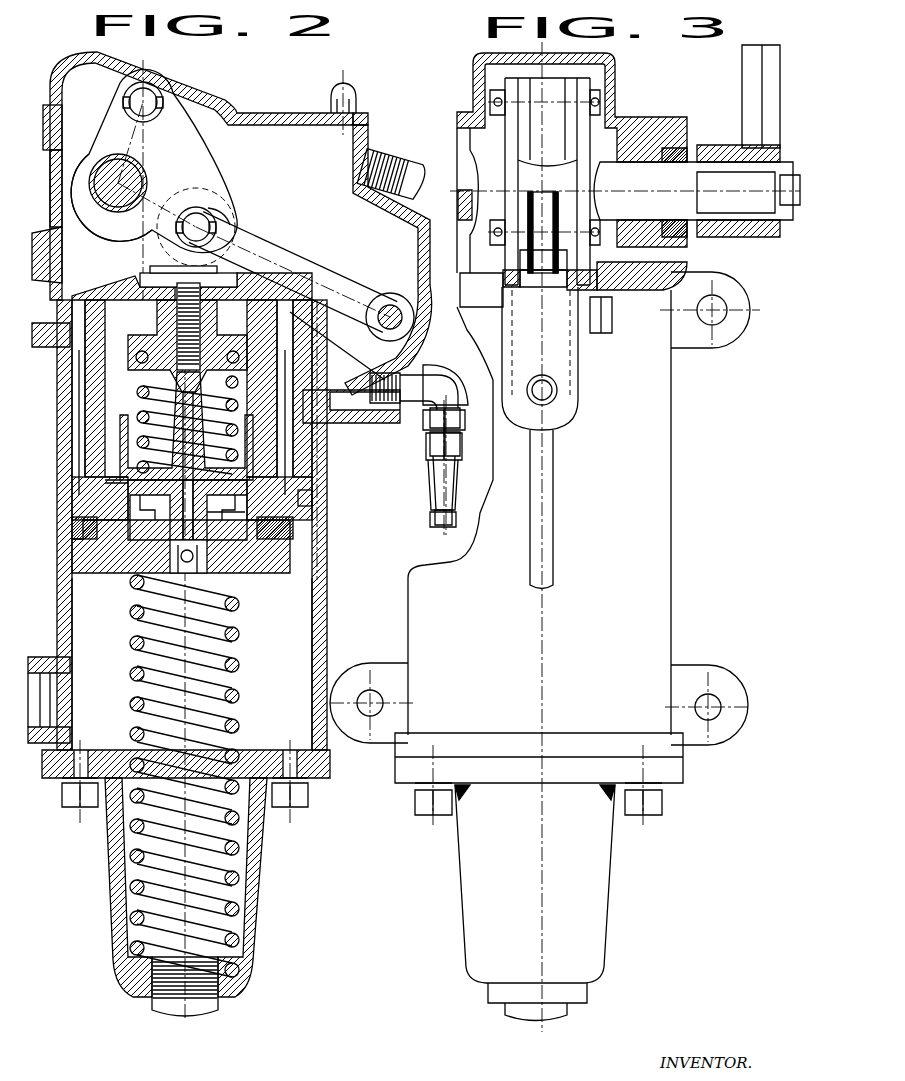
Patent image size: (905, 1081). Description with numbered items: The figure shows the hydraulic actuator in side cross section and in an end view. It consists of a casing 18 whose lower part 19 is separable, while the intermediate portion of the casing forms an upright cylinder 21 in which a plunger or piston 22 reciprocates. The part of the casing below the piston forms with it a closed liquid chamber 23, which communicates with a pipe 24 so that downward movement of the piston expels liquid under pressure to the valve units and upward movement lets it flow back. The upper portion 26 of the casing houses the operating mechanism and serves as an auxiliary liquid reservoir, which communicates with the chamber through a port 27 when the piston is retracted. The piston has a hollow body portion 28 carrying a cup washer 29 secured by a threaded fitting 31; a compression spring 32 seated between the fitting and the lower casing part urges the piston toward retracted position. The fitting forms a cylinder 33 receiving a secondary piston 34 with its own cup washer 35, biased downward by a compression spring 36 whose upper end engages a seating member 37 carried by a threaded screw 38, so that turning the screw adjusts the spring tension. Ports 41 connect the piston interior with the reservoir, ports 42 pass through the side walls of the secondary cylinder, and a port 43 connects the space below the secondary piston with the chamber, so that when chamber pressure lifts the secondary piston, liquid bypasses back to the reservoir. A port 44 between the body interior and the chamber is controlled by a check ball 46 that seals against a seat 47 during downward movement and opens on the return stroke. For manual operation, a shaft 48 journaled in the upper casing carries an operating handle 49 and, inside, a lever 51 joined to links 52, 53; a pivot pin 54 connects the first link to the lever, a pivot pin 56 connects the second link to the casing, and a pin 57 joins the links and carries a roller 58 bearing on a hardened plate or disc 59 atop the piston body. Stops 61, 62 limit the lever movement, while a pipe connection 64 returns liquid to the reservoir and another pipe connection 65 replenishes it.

In FIG. 2, the casing 18 is at (365, 659).
In FIG. 3, the casing 18 is at (700, 597).
In FIG. 2, the lower part of the casing 19 is at (262, 882).
In FIG. 3, the lower part of the casing 19 is at (613, 898).
In FIG. 2, the upright cylinder 21 is at (312, 608).
In FIG. 3, the upright cylinder 21 is at (655, 515).
In FIG. 2, the plunger or piston 22 is at (365, 463).
In FIG. 2, the liquid chamber 23 is at (285, 628).
In FIG. 2, the pipe 24 is at (170, 1010).
In FIG. 3, the pipe 24 is at (512, 1019).
In FIG. 2, the upper portion of the casing 26 is at (268, 143).
In FIG. 3, the upper portion of the casing 26 is at (602, 137).
In FIG. 2, the port 27 is at (315, 498).
In FIG. 2, the body portion 28 is at (282, 436).
In FIG. 2, the cup washer 29 is at (300, 547).
In FIG. 2, the threaded fitting 31 is at (270, 563).
In FIG. 2, the compression spring 32 is at (238, 695).
In FIG. 2, the cylinder 33 is at (240, 415).
In FIG. 2, the secondary piston 34 is at (130, 493).
In FIG. 2, the cup washer 35 is at (247, 512).
In FIG. 2, the compression spring 36 is at (138, 388).
In FIG. 2, the seating member 37 is at (140, 352).
In FIG. 2, the threaded screw 38 is at (180, 330).
In FIG. 2, the ports 41 is at (300, 300).
In FIG. 2, the ports 42 is at (252, 478).
In FIG. 2, the port 43 is at (205, 556).
In FIG. 2, the port 44 is at (146, 518).
In FIG. 2, the check ball 46 is at (185, 573).
In FIG. 2, the seat 47 is at (229, 518).
In FIG. 2, the shaft 48 is at (98, 190).
In FIG. 3, the shaft 48 is at (700, 165).
In FIG. 3, the operating handle 49 is at (752, 93).
In FIG. 2, the lever 51 is at (78, 167).
In FIG. 3, the lever 51 is at (557, 87).
In FIG. 2, the link 52 is at (185, 145).
In FIG. 3, the link 52 is at (573, 138).
In FIG. 2, the link 53 is at (268, 237).
In FIG. 3, the link 53 is at (560, 255).
In FIG. 2, the pivot pin 54 is at (150, 100).
In FIG. 3, the pivot pin 54 is at (490, 96).
In FIG. 2, the pivot pin 56 is at (396, 293).
In FIG. 3, the pivot pin 56 is at (600, 337).
In FIG. 2, the pin 57 is at (205, 220).
In FIG. 3, the pin 57 is at (490, 230).
In FIG. 2, the roller 58 is at (220, 213).
In FIG. 3, the roller 58 is at (537, 192).
In FIG. 2, the plate or disc 59 is at (165, 273).
In FIG. 3, the plate or disc 59 is at (555, 278).
In FIG. 2, the stop 61 is at (58, 138).
In FIG. 2, the stop 62 is at (75, 238).
In FIG. 2, the pipe connection 64 is at (430, 503).
In FIG. 3, the pipe connection 64 is at (444, 467).
In FIG. 2, the pipe connection 65 is at (393, 155).